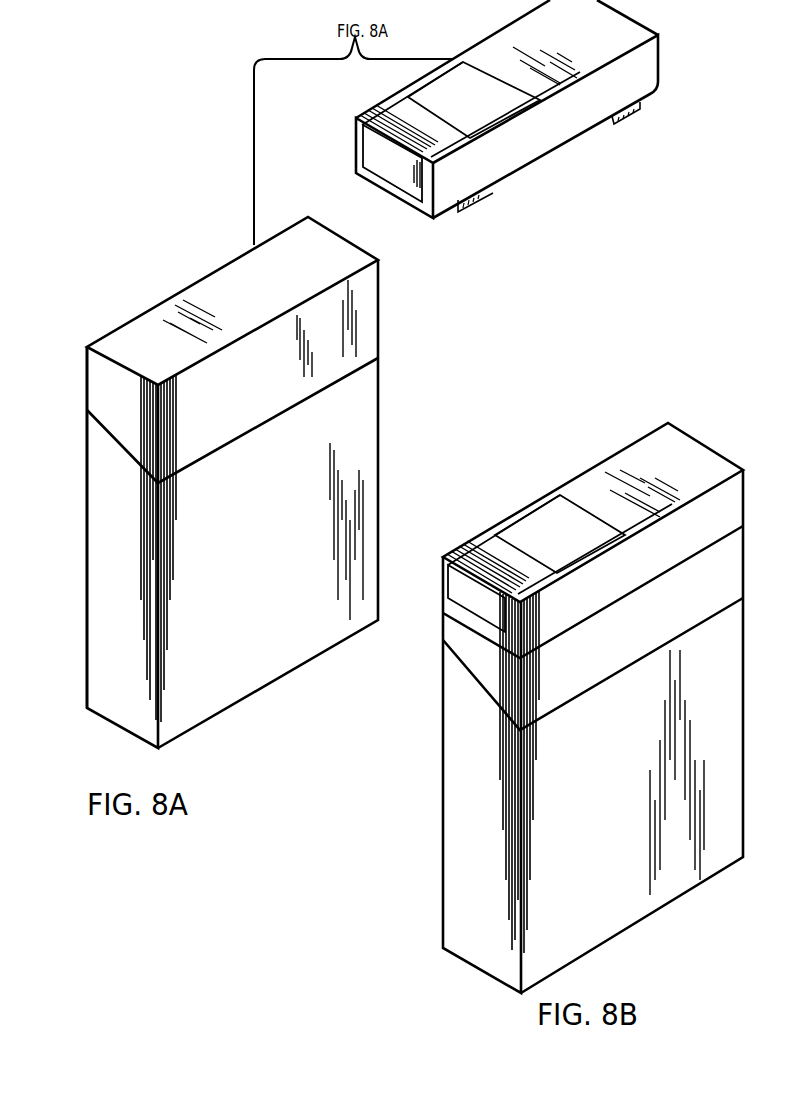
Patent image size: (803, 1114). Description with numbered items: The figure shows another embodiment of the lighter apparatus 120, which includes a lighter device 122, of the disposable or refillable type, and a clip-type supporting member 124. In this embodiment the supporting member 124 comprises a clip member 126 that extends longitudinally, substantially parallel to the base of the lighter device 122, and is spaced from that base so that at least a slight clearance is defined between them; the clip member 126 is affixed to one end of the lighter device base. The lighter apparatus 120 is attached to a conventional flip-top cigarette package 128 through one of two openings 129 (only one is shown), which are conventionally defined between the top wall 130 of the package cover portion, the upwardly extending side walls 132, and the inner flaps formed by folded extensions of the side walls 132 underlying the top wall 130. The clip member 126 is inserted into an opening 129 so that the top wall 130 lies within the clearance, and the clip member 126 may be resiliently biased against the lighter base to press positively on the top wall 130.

In FIG. 8A, the lighter apparatus 120 is at (663, 45).
In FIG. 8B, the lighter device 122 is at (675, 440).
In FIG. 8A, the clip-type supporting member 124 is at (615, 128).
In FIG. 8A, the clip member 126 is at (553, 157).
In FIG. 8A, the flip-top cigarette package 128 is at (383, 458).
In FIG. 8B, the flip-top cigarette package 128 is at (443, 805).
In FIG. 8A, the opening 129 is at (123, 360).
In FIG. 8A, the top wall 130 is at (228, 275).
In FIG. 8A, the side wall 132 is at (98, 387).